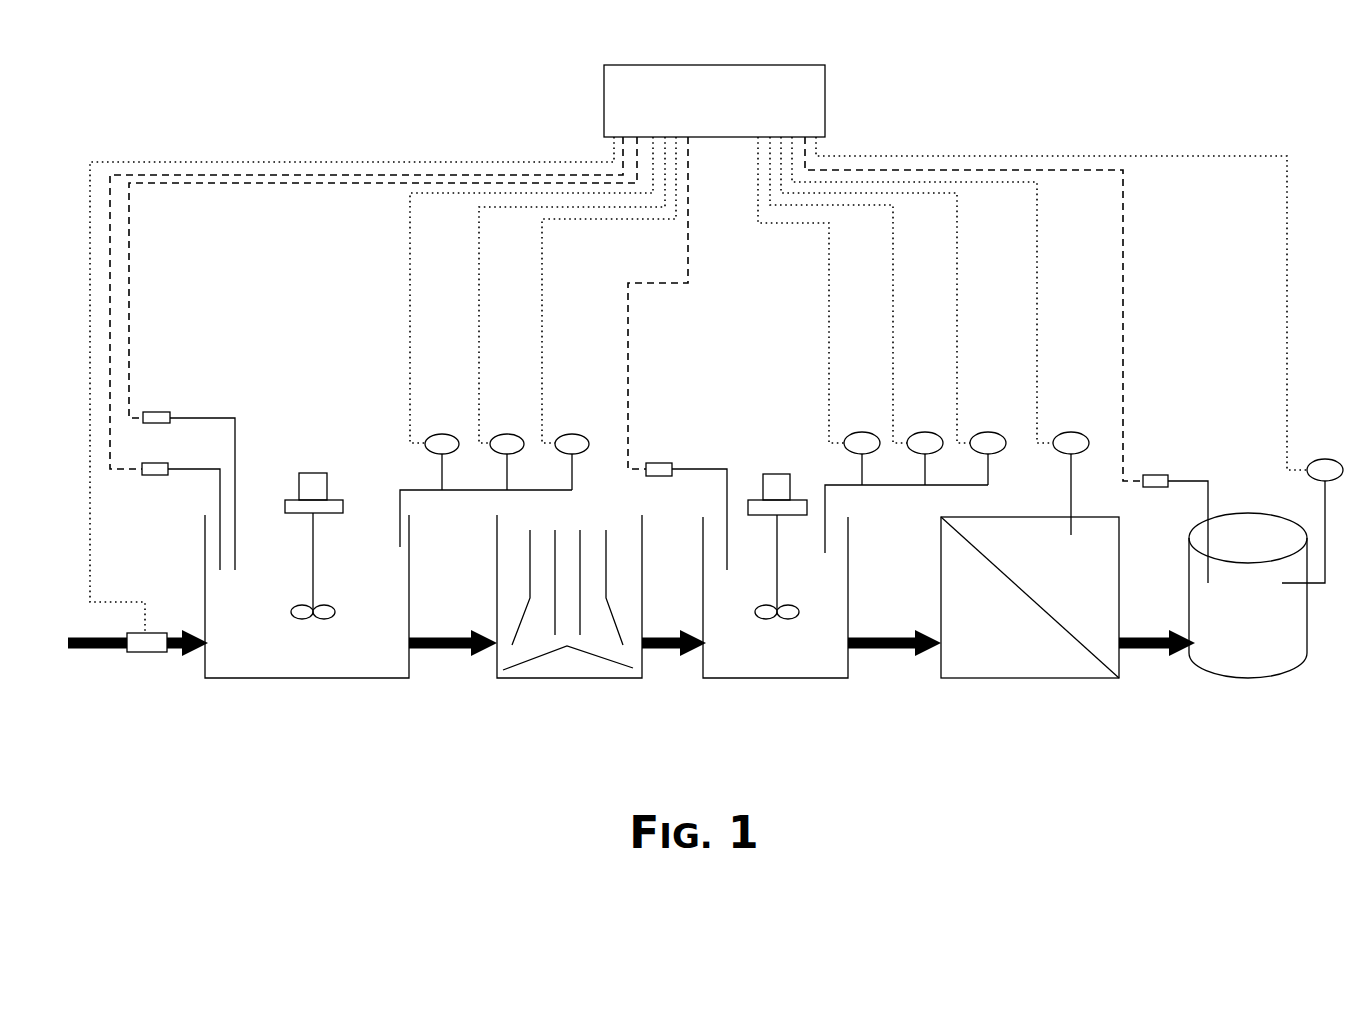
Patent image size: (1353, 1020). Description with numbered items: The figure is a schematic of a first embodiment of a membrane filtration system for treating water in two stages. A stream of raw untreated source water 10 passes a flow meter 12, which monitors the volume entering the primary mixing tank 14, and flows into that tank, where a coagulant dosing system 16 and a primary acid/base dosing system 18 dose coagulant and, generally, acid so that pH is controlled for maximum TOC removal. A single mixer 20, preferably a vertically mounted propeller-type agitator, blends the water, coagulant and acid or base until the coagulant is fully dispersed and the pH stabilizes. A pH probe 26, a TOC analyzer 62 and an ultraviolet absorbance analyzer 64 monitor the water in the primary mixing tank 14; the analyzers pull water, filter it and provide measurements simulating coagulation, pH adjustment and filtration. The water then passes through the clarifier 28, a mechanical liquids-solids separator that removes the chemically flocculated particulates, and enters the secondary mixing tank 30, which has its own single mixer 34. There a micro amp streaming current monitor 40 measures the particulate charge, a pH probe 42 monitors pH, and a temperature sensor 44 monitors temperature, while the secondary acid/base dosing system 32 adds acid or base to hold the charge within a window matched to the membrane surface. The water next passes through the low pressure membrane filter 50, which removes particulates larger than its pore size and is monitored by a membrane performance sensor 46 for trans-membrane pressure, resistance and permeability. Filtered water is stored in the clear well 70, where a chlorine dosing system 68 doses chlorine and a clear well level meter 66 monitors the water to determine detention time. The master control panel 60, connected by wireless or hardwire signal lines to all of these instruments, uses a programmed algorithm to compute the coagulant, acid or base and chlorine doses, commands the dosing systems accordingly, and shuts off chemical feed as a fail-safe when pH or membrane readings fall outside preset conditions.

The raw untreated source water 10 is at (97, 660).
The flow meter 12 is at (138, 653).
The primary mixing tank 14 is at (313, 690).
The coagulant dosing system 16 is at (155, 476).
The primary acid/base dosing system 18 is at (157, 412).
The mixer 20 is at (313, 462).
The pH probe 26 is at (442, 422).
The clarifier 28 is at (567, 690).
The secondary mixing tank 30 is at (777, 690).
The secondary acid/base dosing system 32 is at (655, 463).
The mixer 34 is at (777, 462).
The micro amp streaming current monitor 40 is at (862, 420).
The pH probe 42 is at (925, 420).
The temperature sensor 44 is at (988, 420).
The membrane performance sensor 46 is at (1071, 420).
The membrane filter 50 is at (1037, 690).
The master control panel 60 is at (703, 110).
The TOC analyzer 62 is at (507, 422).
The UV 254 analyzer 64 is at (572, 422).
The clear well level meter 66 is at (1325, 447).
The chlorine dosing system 68 is at (1157, 462).
The clear well 70 is at (1236, 648).